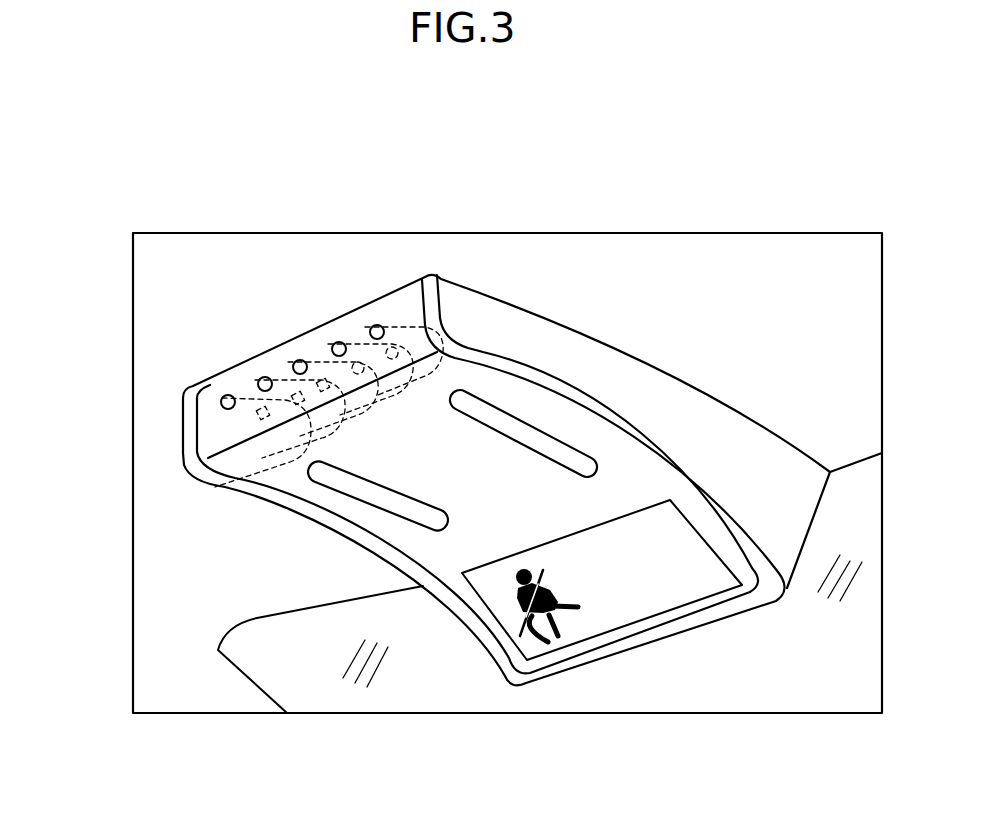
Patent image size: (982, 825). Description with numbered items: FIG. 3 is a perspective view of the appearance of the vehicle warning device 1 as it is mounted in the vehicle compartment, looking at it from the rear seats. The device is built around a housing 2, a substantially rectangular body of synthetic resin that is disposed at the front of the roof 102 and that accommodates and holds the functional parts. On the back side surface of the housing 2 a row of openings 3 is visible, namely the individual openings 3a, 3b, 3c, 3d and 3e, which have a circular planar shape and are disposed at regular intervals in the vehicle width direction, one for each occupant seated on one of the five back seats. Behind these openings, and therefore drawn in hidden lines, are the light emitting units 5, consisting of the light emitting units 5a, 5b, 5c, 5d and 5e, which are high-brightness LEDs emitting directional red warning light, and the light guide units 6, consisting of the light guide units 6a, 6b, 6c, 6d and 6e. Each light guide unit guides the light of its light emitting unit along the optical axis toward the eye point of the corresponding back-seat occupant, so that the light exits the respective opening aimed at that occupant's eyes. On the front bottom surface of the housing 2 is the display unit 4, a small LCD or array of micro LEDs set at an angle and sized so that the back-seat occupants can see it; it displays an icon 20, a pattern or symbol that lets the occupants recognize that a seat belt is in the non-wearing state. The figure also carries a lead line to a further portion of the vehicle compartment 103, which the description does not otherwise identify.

The vehicle warning device 1 is at (511, 285).
The housing 2 is at (585, 357).
The openings 3 is at (230, 255).
The opening 3a is at (221, 403).
The opening 3b is at (258, 383).
The opening 3c is at (293, 365).
The opening 3d is at (336, 342).
The opening 3e is at (377, 325).
The display unit 4 is at (673, 527).
The light emitting units 5 is at (268, 325).
The light emitting unit 5a is at (257, 418).
The light emitting unit 5b is at (292, 404).
The light emitting unit 5c is at (320, 380).
The light emitting unit 5d is at (357, 362).
The light emitting unit 5e is at (396, 348).
The light guide units 6 is at (246, 299).
The light guide unit 6a is at (243, 420).
The light guide unit 6b is at (255, 380).
The light guide unit 6c is at (288, 364).
The light guide unit 6d is at (345, 362).
The light guide unit 6e is at (396, 345).
The icon 20 is at (577, 621).
The roof 102 is at (697, 290).
The pillar 103 is at (860, 493).